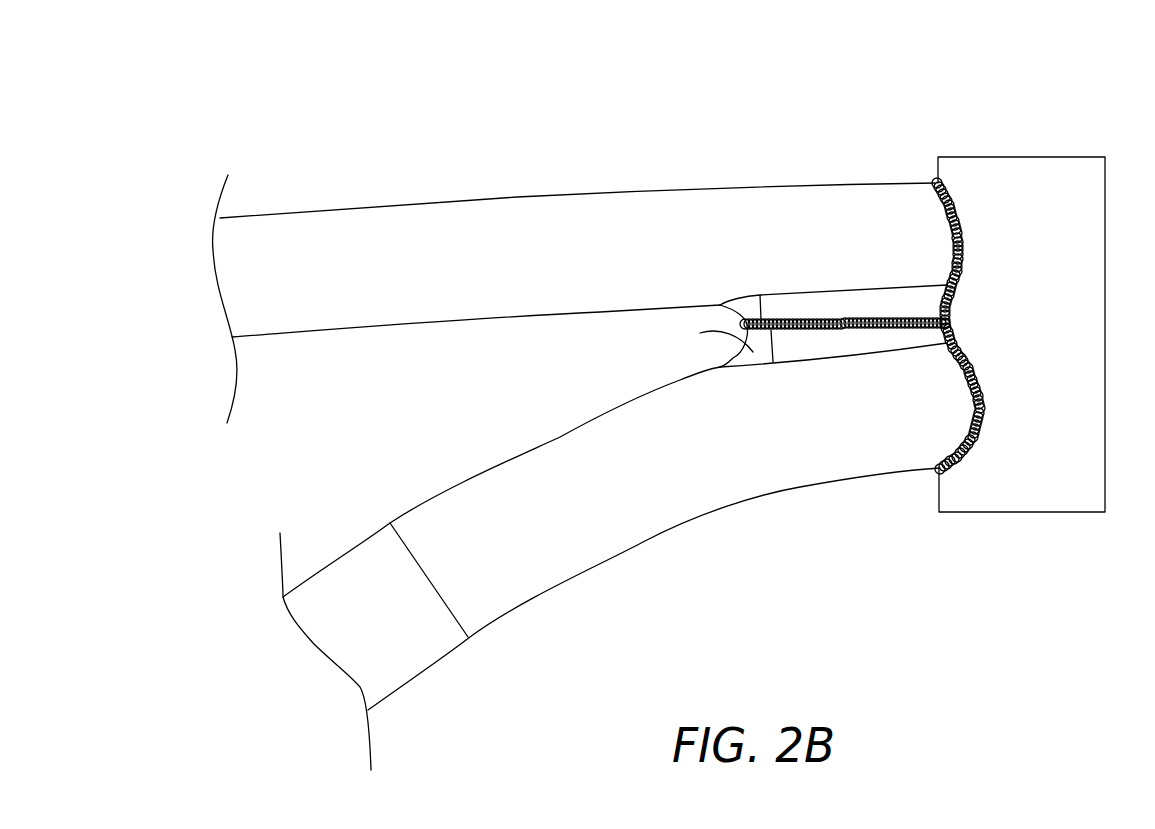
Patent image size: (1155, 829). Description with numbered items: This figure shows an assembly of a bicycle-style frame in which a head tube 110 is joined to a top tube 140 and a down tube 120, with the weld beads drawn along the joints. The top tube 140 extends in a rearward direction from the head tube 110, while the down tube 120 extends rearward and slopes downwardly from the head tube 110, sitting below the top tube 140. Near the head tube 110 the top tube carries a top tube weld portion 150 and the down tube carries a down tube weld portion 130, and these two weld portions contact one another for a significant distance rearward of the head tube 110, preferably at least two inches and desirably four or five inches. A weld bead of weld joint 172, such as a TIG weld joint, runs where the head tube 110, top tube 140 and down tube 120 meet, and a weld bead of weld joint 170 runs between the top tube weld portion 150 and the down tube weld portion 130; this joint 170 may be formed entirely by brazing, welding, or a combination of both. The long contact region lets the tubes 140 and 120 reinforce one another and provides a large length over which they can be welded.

The head tube 110 is at (1037, 187).
The down tube 120 is at (643, 520).
The down tube weld portion 130 is at (700, 333).
The top tube 140 is at (527, 233).
The top tube weld portion 150 is at (818, 307).
The weld joint 170 is at (840, 323).
The weld joint 172 is at (980, 408).